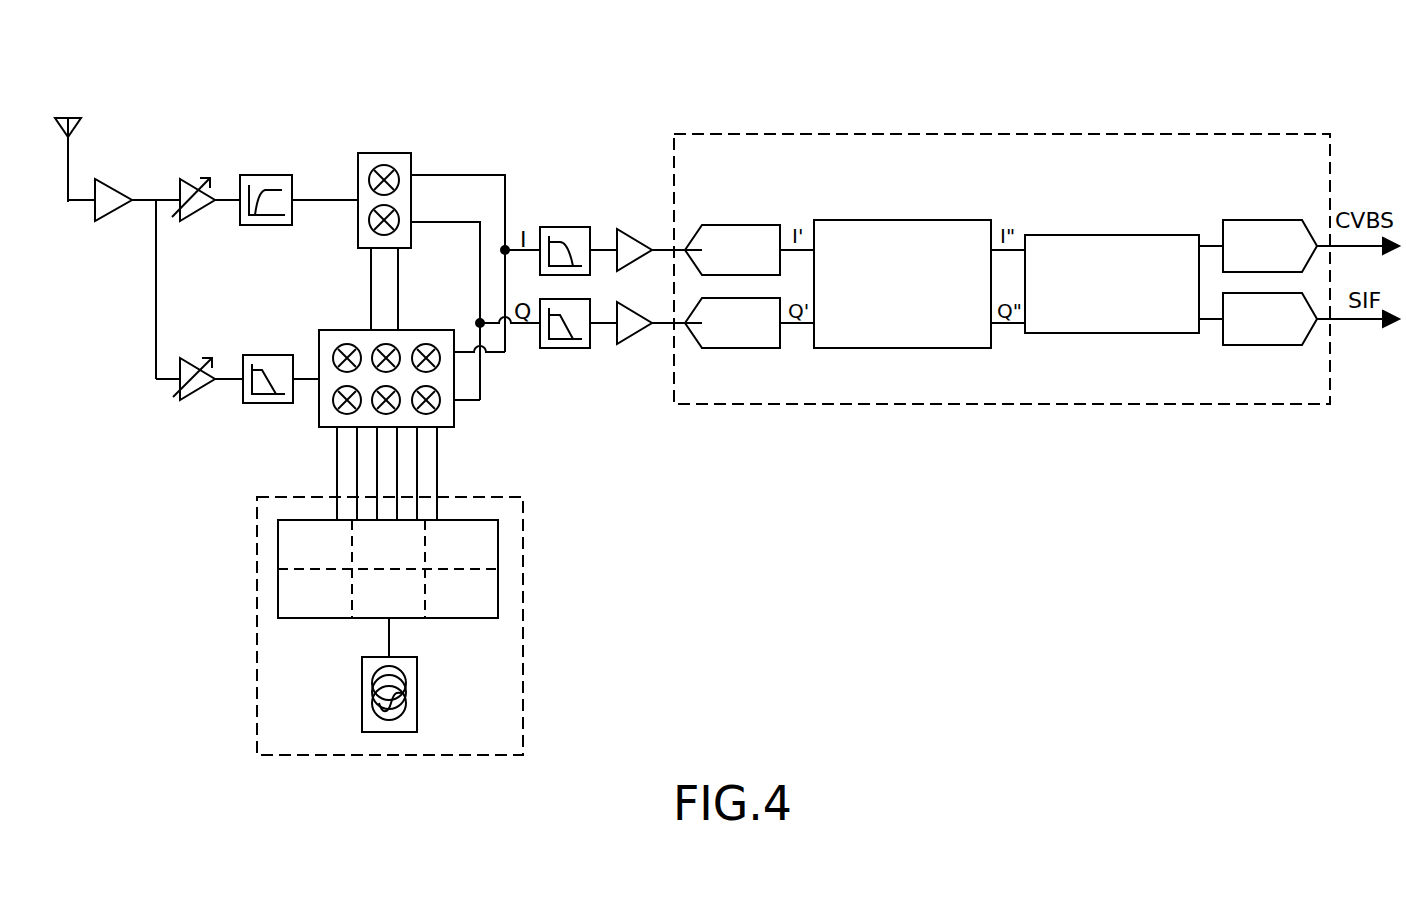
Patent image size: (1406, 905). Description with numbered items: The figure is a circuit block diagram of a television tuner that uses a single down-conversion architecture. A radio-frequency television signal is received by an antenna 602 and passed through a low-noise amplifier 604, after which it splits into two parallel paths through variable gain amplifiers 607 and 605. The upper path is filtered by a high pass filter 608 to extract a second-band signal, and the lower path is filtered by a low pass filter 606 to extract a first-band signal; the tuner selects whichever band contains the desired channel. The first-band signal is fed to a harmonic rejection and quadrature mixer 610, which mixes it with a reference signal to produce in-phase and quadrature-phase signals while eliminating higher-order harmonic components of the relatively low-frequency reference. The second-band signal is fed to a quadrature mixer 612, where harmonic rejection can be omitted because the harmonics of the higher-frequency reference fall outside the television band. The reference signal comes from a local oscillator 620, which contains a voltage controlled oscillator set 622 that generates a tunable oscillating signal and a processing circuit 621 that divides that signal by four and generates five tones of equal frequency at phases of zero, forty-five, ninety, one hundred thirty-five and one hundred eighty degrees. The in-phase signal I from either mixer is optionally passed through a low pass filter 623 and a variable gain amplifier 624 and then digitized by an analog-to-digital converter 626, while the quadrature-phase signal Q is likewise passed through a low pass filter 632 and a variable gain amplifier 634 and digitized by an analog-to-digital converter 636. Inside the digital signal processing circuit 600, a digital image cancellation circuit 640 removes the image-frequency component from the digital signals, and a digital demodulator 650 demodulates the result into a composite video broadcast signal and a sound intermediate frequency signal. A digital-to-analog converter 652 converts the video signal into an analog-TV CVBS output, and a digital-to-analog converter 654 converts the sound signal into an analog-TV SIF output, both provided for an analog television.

The digital signal processing circuit 600 is at (1183, 134).
The antenna 602 is at (82, 120).
The low-noise amplifier 604 is at (108, 184).
The variable gain amplifier 605 is at (193, 388).
The low pass filter 606 is at (280, 355).
The variable gain amplifier 607 is at (193, 216).
The high pass filter 608 is at (262, 175).
The harmonic rejection and quadrature mixer 610 is at (412, 330).
The quadrature mixer 612 is at (388, 153).
The local oscillator 620 is at (300, 497).
The processing circuit 621 is at (462, 520).
The voltage controlled oscillator set 622 is at (418, 687).
The low pass filter 623 is at (567, 227).
The variable gain amplifier 624 is at (625, 248).
The analog-to-digital converter 626 is at (735, 225).
The low pass filter 632 is at (568, 348).
The variable gain amplifier 634 is at (625, 322).
The analog-to-digital converter 636 is at (742, 348).
The digital image cancellation circuit 640 is at (922, 220).
The digital demodulator 650 is at (1143, 236).
The digital-to-analog converter 652 is at (1250, 220).
The digital-to-analog converter 654 is at (1277, 345).